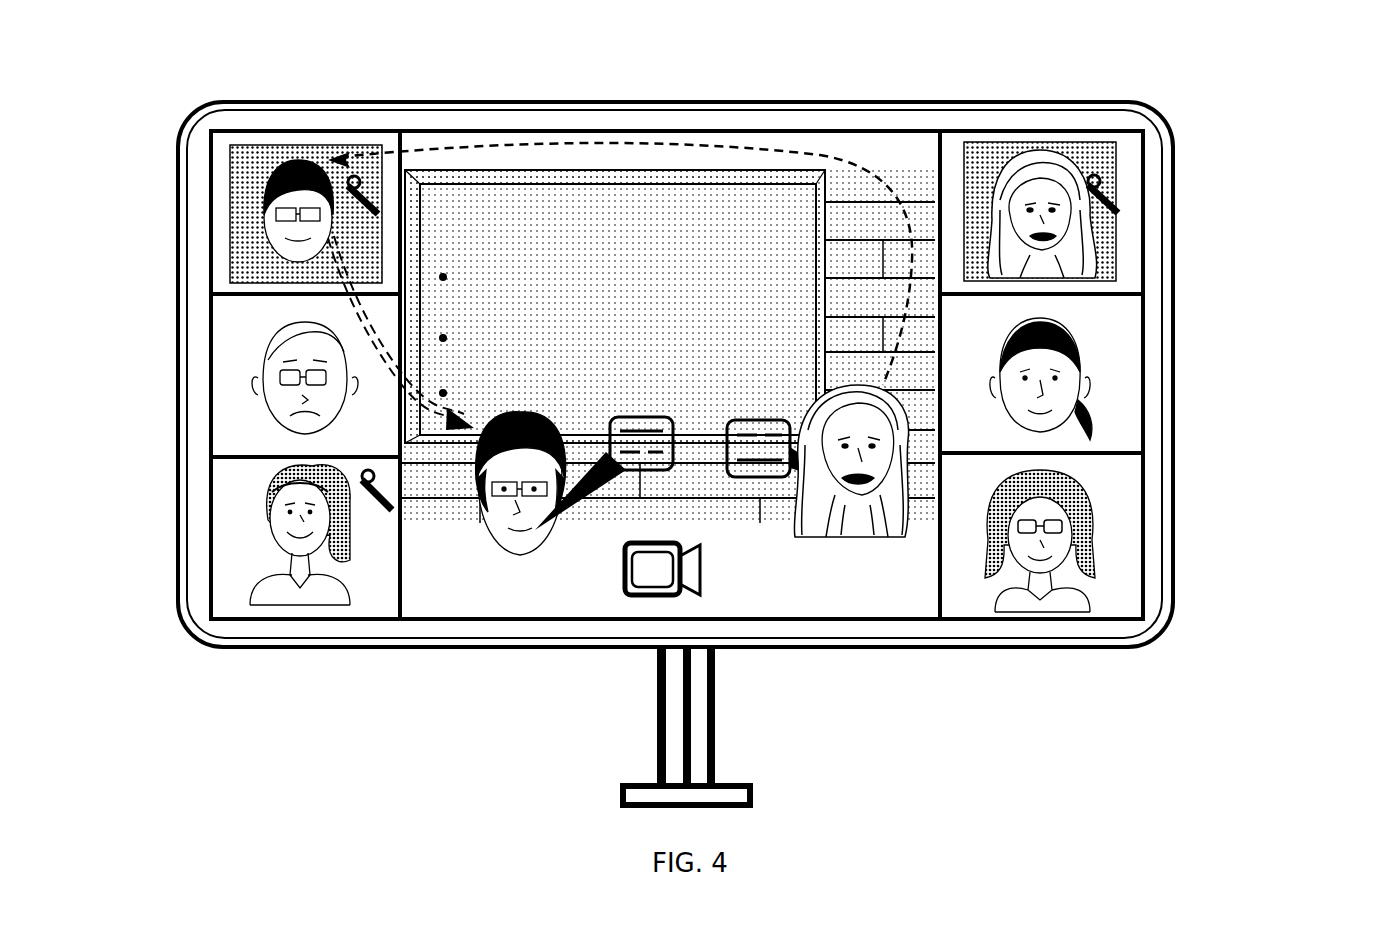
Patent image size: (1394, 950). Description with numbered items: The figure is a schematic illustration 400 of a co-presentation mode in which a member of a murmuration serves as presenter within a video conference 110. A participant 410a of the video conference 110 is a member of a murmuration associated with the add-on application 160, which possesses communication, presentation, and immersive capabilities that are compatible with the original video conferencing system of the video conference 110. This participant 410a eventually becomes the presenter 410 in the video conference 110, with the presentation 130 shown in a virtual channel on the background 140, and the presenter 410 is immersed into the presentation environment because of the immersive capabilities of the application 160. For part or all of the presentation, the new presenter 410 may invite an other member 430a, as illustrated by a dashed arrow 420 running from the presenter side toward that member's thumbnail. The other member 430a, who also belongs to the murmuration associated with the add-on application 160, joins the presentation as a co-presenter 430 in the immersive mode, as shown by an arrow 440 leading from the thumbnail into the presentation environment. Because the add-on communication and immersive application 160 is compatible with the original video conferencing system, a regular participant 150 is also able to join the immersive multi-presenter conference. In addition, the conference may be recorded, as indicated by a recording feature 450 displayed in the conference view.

The schematic illustration 400 is at (1388, 96).
The video conference 110 is at (1172, 142).
The presentation 130 is at (688, 180).
The background 140 is at (852, 258).
The regular participant 150 is at (1143, 527).
The add-on application 160 is at (1130, 196).
The presenter 410 is at (852, 537).
The participant 410a is at (1090, 240).
The dashed arrow 420 is at (857, 163).
The co-presenter 430 is at (525, 552).
The other member 430a is at (260, 225).
The arrow 440 is at (440, 402).
The recording feature 450 is at (678, 598).